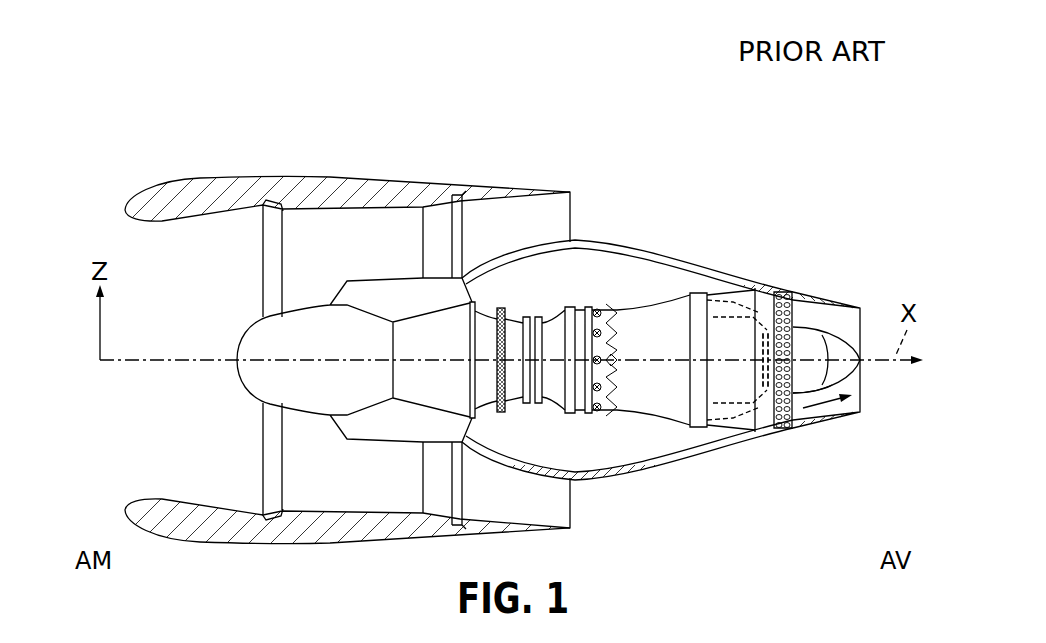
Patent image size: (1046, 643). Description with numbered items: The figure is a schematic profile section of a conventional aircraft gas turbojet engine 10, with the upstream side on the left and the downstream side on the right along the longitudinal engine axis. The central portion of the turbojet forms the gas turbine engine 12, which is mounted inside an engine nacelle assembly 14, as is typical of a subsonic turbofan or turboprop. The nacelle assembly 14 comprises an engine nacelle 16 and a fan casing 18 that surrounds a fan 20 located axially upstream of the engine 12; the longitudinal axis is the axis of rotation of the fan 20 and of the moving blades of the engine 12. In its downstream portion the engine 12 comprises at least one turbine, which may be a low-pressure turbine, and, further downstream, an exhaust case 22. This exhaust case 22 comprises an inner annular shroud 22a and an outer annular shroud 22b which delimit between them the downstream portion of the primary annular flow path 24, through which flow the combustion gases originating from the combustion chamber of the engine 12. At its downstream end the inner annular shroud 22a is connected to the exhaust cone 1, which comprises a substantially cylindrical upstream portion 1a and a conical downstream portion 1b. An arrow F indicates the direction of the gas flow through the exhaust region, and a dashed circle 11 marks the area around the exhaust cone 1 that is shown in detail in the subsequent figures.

The aircraft gas turbojet engine 10 is at (575, 150).
The engine nacelle assembly 14 is at (321, 160).
The fan 20 is at (268, 243).
The fan casing 18 is at (418, 188).
The gas turbine engine 12 is at (704, 238).
The engine nacelle 16 is at (616, 244).
The exhaust case 22 is at (734, 300).
The outer annular shroud 22b is at (753, 290).
The inner annular shroud 22a is at (735, 402).
The primary annular flow path 24 is at (723, 415).
The dashed circle 11 is at (800, 288).
The exhaust cone 1 is at (850, 374).
The downstream portion 1b is at (833, 350).
The upstream portion 1a is at (803, 372).
The gas flow F is at (818, 408).